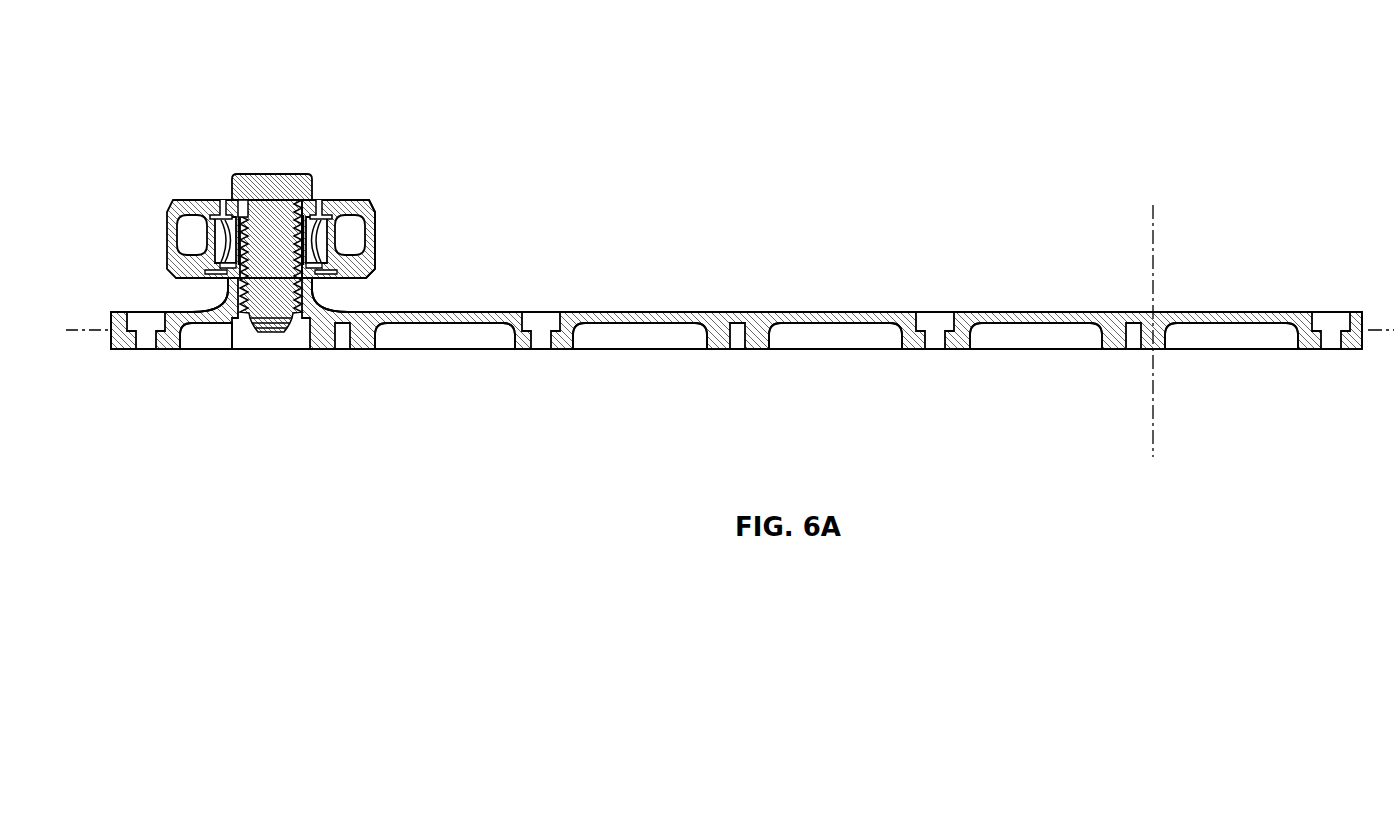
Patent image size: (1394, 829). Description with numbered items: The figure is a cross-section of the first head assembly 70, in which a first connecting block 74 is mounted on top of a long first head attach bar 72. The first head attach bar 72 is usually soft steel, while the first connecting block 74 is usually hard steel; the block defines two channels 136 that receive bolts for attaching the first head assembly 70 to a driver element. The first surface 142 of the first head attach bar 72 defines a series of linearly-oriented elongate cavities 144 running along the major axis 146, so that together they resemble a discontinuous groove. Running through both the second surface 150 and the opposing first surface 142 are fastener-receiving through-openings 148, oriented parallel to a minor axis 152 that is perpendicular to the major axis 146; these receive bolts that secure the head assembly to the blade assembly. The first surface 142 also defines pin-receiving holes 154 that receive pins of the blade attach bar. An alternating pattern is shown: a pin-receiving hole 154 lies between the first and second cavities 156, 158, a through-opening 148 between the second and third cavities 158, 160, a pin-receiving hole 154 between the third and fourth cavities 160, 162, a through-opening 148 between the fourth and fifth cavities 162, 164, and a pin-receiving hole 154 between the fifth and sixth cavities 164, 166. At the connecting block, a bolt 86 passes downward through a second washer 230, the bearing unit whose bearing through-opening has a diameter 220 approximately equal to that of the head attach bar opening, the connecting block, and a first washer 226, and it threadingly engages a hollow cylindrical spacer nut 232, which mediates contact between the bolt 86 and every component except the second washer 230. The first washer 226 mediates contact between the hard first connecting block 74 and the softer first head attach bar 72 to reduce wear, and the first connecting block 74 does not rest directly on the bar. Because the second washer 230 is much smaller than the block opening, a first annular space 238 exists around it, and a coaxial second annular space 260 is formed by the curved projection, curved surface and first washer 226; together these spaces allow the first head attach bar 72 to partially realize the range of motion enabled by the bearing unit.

The first head assembly 70 is at (157, 84).
The first head attach bar 72 is at (763, 318).
The first connecting block 74 is at (346, 199).
The bolt 86 is at (268, 174).
The channels 136 is at (350, 216).
The first surface 142 is at (913, 349).
The linearly-oriented elongate cavities 144 is at (188, 343).
The major axis 146 is at (75, 342).
The fastener-receiving through-openings 148 is at (142, 315).
The second surface 150 is at (808, 312).
The minor axis 152 is at (1155, 430).
The pin-receiving holes 154 is at (342, 343).
The first cavity 156 is at (203, 343).
The second cavity 158 is at (460, 338).
The third cavity 160 is at (646, 338).
The fourth cavity 162 is at (863, 338).
The fifth cavity 164 is at (1036, 338).
The sixth cavity 166 is at (1245, 336).
The diameter of bearing through-opening 220 is at (316, 243).
The first washer 226 is at (322, 280).
The second washer 230 is at (238, 207).
The hollow cylindrical spacer nut 232 is at (245, 289).
The first annular space 238 is at (222, 205).
The second annular space 260 is at (192, 276).